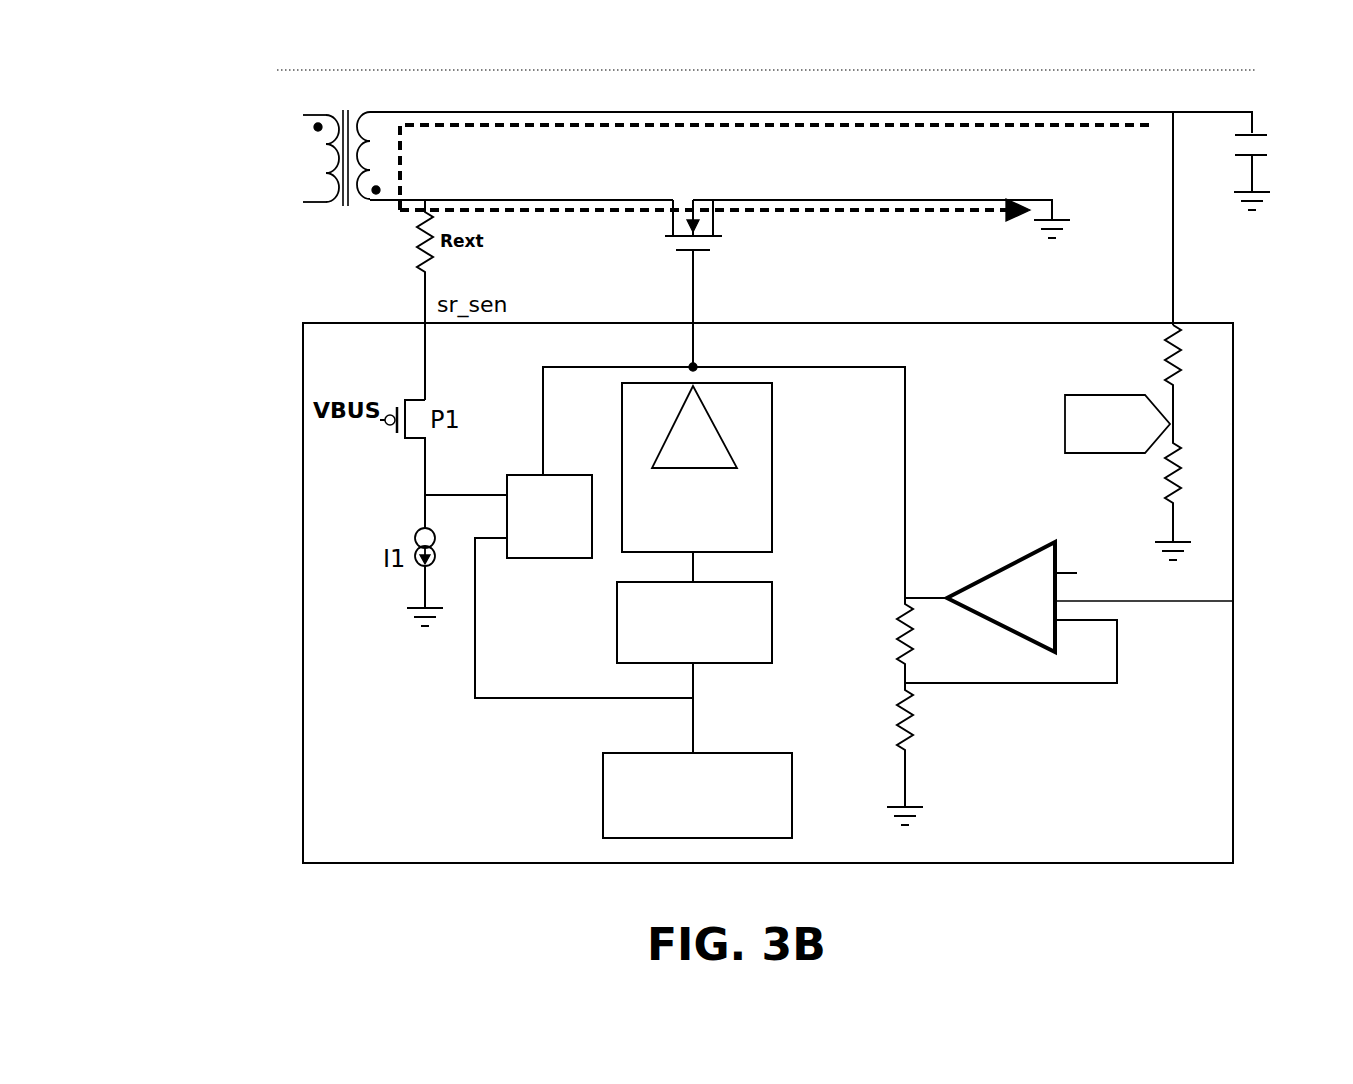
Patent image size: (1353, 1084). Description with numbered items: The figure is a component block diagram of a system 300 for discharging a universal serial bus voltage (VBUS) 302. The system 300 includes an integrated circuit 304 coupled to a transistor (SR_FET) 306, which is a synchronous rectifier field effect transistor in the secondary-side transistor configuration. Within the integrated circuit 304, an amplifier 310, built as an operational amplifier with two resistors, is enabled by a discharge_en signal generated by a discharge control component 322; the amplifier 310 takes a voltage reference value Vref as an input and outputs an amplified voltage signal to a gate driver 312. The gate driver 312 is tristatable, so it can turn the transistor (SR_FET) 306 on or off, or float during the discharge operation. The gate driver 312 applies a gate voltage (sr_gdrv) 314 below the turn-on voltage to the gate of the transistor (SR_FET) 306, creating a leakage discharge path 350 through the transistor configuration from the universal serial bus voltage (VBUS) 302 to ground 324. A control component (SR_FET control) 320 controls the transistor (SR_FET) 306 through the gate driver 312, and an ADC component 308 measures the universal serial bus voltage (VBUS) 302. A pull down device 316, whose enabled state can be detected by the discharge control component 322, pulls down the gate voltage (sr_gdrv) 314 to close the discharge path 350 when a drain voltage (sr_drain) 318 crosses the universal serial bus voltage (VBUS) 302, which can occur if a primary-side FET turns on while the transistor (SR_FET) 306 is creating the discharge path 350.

The system 300 is at (190, 104).
The universal serial bus voltage (VBUS) 302 is at (1108, 110).
The integrated circuit 304 is at (303, 722).
The transistor (SR_FET) 306 is at (714, 212).
The ADC component 308 is at (1130, 381).
The amplifier (A1) 310 is at (1032, 550).
The gate driver (D1) 312 is at (773, 456).
The gate voltage (sr_gdrv) 314 is at (694, 293).
The pull down device 316 is at (572, 559).
The drain voltage (sr_drain) 318 is at (488, 185).
The control component (SR_FET control) 320 is at (617, 628).
The discharge control component 322 is at (600, 802).
The ground 324 is at (1040, 200).
The discharge path 350 is at (968, 213).